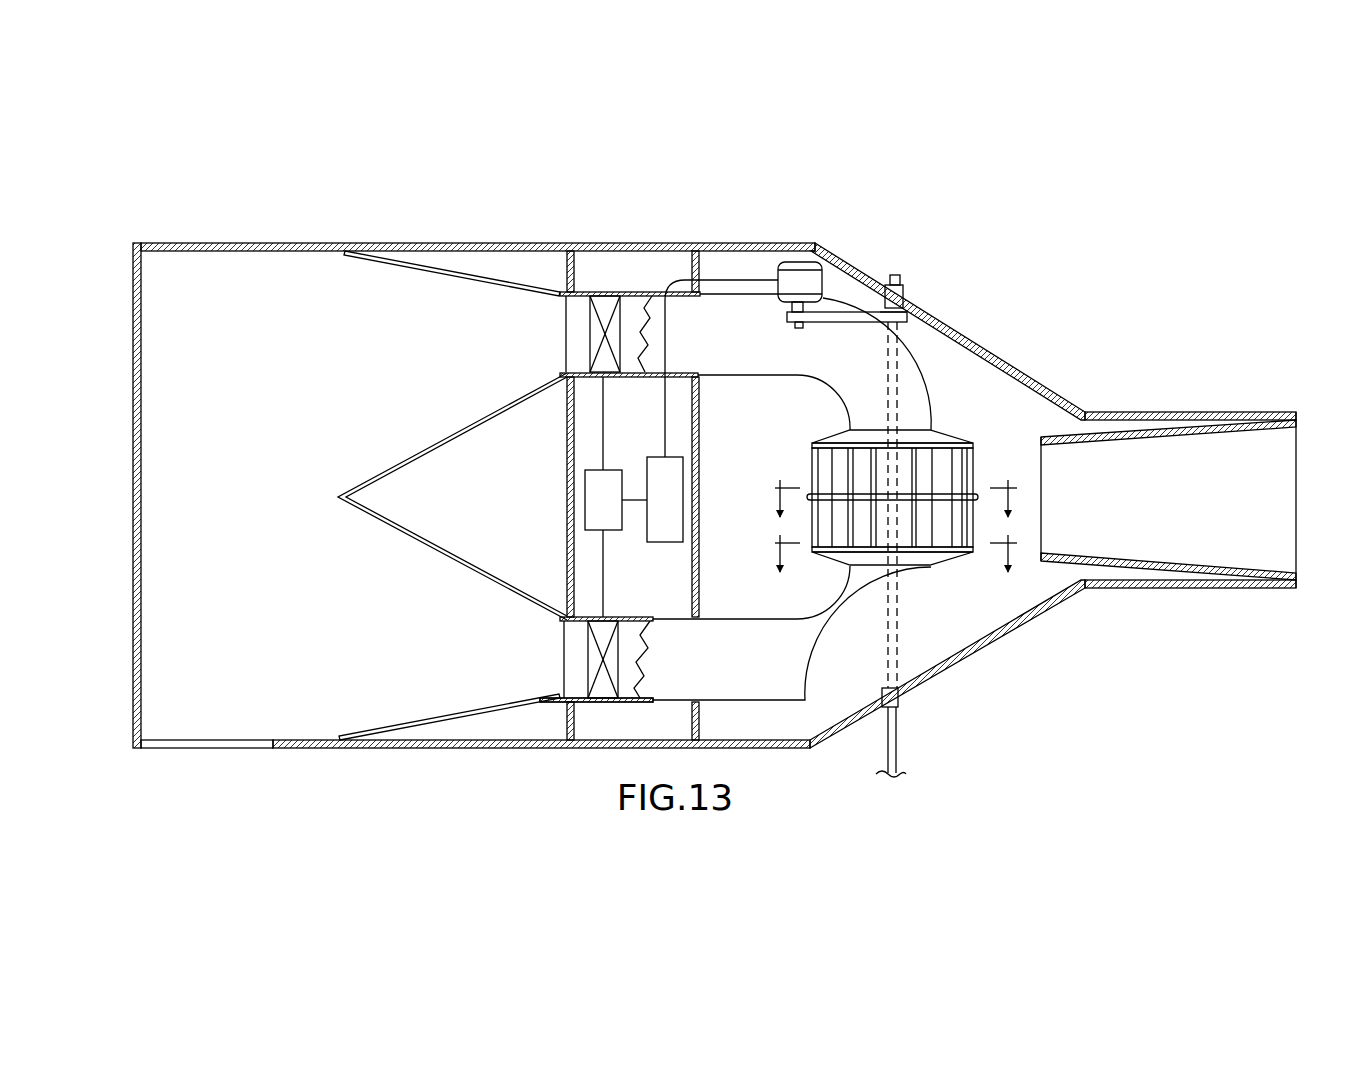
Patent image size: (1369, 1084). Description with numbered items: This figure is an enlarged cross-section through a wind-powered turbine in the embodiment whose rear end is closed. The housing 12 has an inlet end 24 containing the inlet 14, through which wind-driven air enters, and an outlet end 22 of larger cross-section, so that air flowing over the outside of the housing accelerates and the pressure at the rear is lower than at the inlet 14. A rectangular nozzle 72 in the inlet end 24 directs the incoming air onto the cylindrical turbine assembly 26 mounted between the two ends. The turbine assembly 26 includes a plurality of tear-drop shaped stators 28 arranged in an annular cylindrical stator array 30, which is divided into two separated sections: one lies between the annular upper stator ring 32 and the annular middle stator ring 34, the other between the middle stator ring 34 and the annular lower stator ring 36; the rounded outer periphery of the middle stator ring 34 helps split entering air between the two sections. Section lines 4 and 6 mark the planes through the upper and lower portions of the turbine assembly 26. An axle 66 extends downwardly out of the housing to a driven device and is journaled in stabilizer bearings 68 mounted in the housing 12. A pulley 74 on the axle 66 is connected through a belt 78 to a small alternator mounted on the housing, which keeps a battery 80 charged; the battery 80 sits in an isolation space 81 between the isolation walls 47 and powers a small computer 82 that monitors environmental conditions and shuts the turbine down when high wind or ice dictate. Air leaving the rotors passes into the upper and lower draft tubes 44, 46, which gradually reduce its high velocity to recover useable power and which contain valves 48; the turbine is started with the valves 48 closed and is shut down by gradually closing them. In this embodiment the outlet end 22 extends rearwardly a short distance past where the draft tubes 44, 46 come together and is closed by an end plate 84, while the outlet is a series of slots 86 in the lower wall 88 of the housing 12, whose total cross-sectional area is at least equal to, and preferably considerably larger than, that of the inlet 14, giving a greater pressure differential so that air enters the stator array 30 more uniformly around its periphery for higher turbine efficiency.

The section line 4 is at (894, 496).
The section line 6 is at (894, 551).
The housing 12 is at (755, 242).
The inlet 14 is at (1272, 490).
The outlet end 22 is at (253, 242).
The inlet end 24 is at (1194, 412).
The turbine assembly 26 is at (778, 308).
The stators 28 is at (862, 465).
The stator array 30 is at (890, 502).
The upper stator ring 32 is at (972, 447).
The middle stator ring 34 is at (978, 496).
The lower stator ring 36 is at (974, 554).
The upper draft tube 44 is at (757, 376).
The lower draft tube 46 is at (745, 640).
The isolation walls 47 is at (566, 272).
The valves 48 is at (589, 331).
The axle 66 is at (895, 275).
The stabilizer bearings 68 is at (904, 297).
The rectangular nozzle 72 is at (1107, 425).
The pulley 74 is at (911, 318).
The belt 78 is at (850, 322).
The battery 80 is at (653, 511).
The isolation space 81 is at (663, 718).
The computer 82 is at (591, 511).
The end plate 84 is at (137, 250).
The slots 86 is at (211, 749).
The lower wall 88 is at (316, 749).